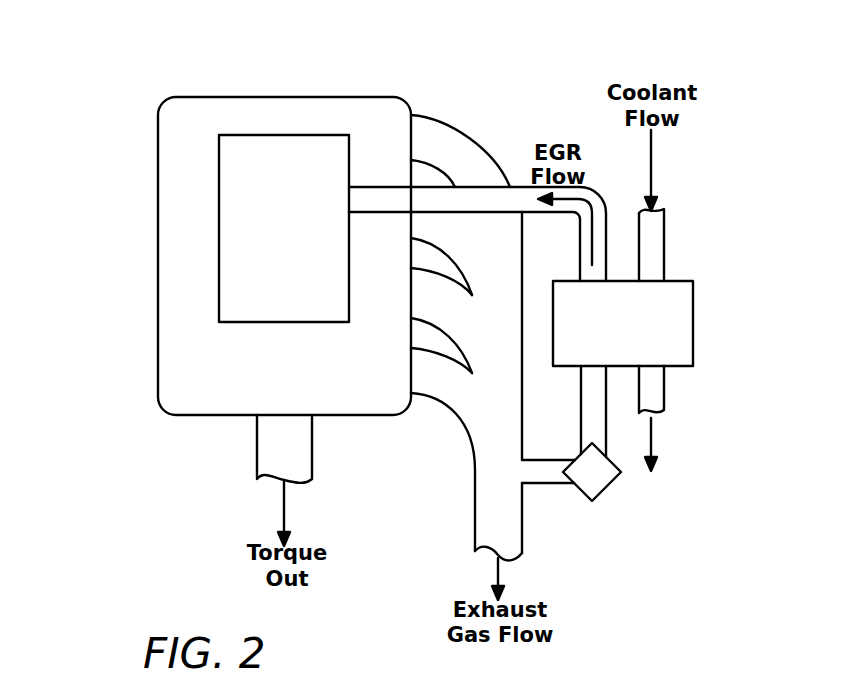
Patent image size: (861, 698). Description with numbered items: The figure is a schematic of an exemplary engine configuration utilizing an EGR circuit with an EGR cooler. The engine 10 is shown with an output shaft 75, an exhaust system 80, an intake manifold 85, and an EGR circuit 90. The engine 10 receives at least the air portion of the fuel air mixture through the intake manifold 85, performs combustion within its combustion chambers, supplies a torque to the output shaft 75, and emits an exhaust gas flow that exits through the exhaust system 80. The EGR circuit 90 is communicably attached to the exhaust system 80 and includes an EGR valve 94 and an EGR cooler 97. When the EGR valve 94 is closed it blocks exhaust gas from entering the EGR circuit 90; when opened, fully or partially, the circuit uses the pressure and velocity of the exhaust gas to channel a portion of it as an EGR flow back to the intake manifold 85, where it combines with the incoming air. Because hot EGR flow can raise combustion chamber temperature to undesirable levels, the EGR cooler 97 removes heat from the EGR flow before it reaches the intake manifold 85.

The engine 10 is at (110, 90).
The intake manifold 85 is at (288, 155).
The exhaust system 80 is at (445, 148).
The output shaft 75 is at (275, 436).
The EGR cooler 97 is at (668, 320).
The EGR circuit 90 is at (597, 425).
The EGR valve 94 is at (592, 470).